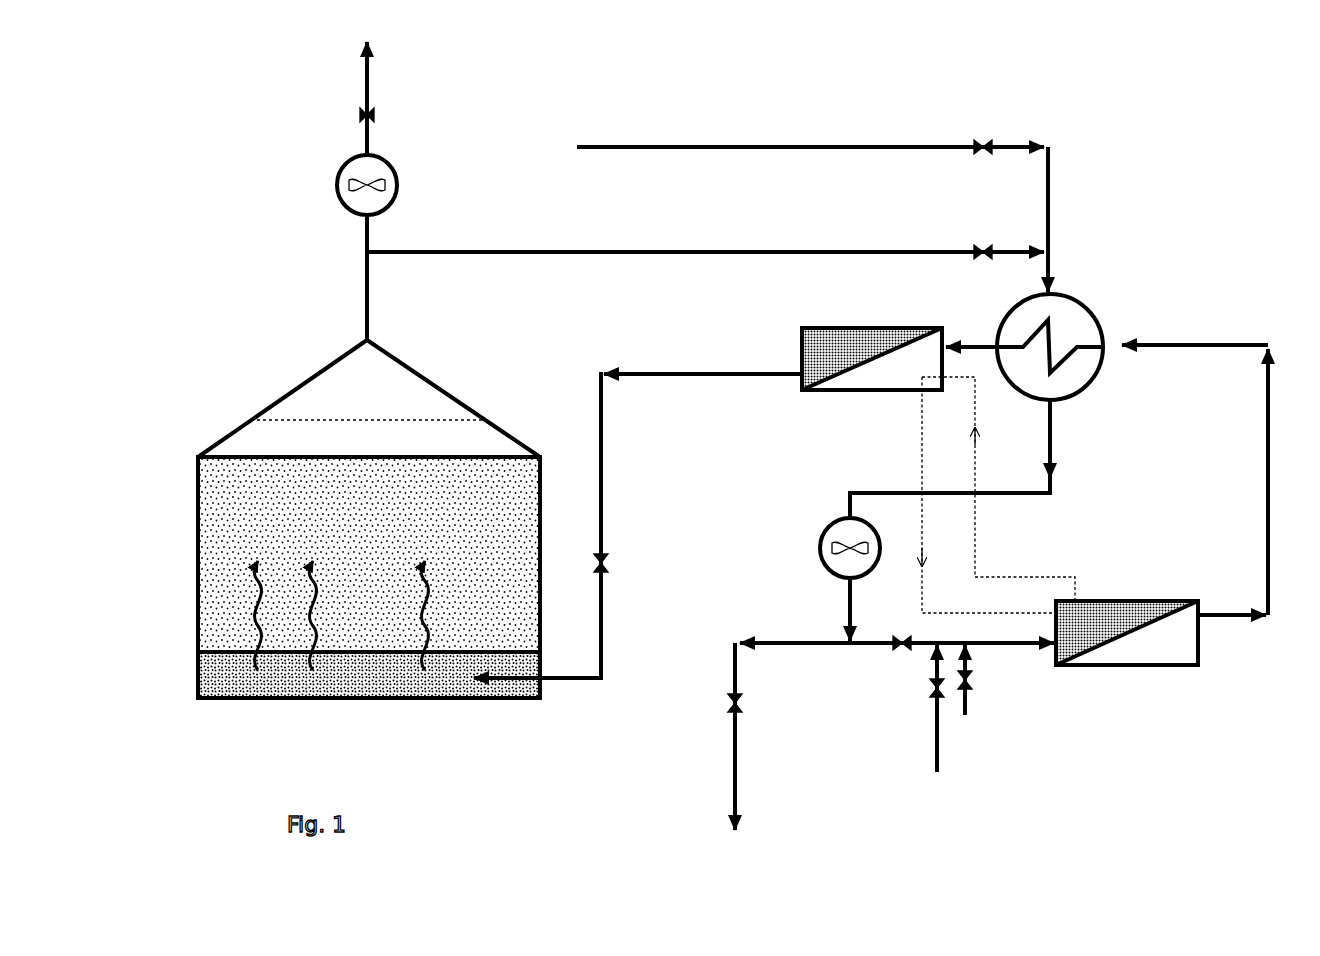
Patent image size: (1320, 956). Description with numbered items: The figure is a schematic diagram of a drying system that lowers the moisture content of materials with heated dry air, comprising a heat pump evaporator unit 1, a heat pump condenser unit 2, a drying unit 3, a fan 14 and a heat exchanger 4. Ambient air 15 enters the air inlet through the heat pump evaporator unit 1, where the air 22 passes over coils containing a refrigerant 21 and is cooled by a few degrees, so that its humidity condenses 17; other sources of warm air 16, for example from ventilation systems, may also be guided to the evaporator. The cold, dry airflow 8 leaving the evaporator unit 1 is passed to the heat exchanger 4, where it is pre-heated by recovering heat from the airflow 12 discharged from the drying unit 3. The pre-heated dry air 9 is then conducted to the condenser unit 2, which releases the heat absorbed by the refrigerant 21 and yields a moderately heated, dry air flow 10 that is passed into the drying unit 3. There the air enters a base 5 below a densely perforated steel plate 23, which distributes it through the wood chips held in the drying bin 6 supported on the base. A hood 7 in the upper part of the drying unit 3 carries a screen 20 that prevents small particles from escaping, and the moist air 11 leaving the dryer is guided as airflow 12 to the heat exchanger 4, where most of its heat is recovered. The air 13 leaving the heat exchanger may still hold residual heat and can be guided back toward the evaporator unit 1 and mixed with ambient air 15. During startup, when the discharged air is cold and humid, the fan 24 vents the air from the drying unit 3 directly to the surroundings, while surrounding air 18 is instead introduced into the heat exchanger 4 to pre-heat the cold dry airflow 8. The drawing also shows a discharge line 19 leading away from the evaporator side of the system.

The heat pump evaporator unit 1 is at (1127, 621).
The heat pump condenser unit 2 is at (872, 345).
The drying unit 3 is at (236, 402).
The heat exchanger 4 is at (1050, 346).
The base 5 is at (369, 674).
The drying bin 6 is at (369, 564).
The hood 7 is at (369, 398).
The airflow 8 is at (1195, 480).
The pre-heated dry air 9 is at (971, 332).
The heated dry air flow 10 is at (671, 525).
The air leaving the drying unit 11 is at (384, 191).
The airflow discharged from the drying unit 12 is at (705, 262).
The air from the heat exchanger 13 is at (967, 459).
The fan 14 is at (838, 573).
The ambient air 15 is at (970, 698).
The warm air 16 is at (942, 725).
The condensate 17 is at (1058, 654).
The surrounding air 18 is at (812, 216).
The discharge line 19 is at (722, 736).
The screen 20 is at (369, 413).
The refrigerant 21 is at (998, 495).
The air 22 is at (897, 653).
The perforated steel plate 23 is at (475, 651).
The fan 24 is at (346, 185).